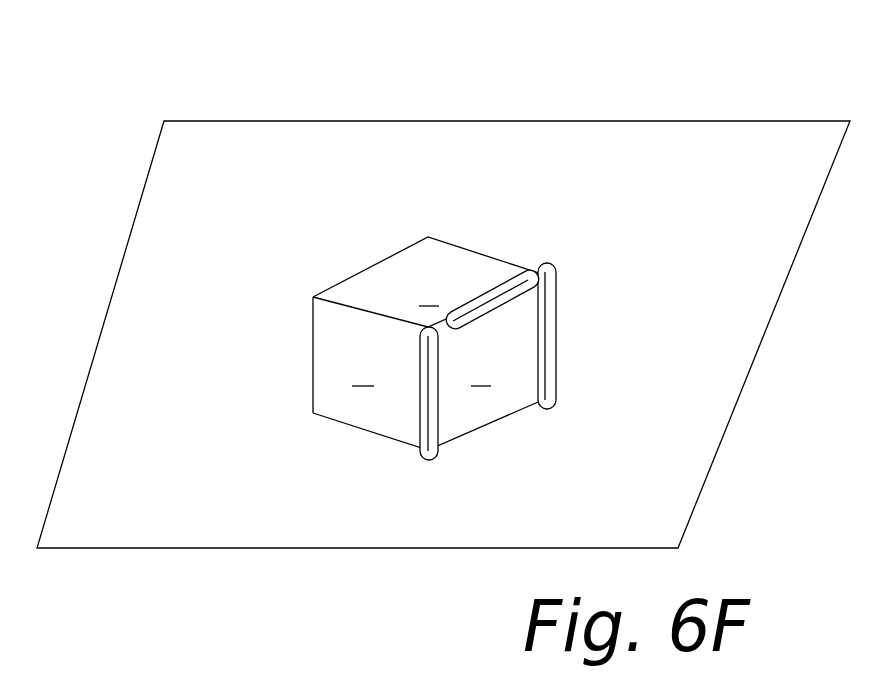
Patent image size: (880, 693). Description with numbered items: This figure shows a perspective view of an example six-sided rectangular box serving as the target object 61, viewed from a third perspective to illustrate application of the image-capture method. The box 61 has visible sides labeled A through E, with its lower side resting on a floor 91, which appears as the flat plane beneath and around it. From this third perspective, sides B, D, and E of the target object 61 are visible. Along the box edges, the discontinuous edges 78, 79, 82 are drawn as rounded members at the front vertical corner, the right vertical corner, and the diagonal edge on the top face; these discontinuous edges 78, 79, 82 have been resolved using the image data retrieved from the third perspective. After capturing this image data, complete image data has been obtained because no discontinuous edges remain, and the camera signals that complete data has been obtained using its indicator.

The floor 91 is at (748, 190).
The target object 61 is at (457, 245).
The discontinuous edge 78 is at (425, 325).
The discontinuous edge 79 is at (550, 263).
The discontinuous edge 82 is at (505, 285).